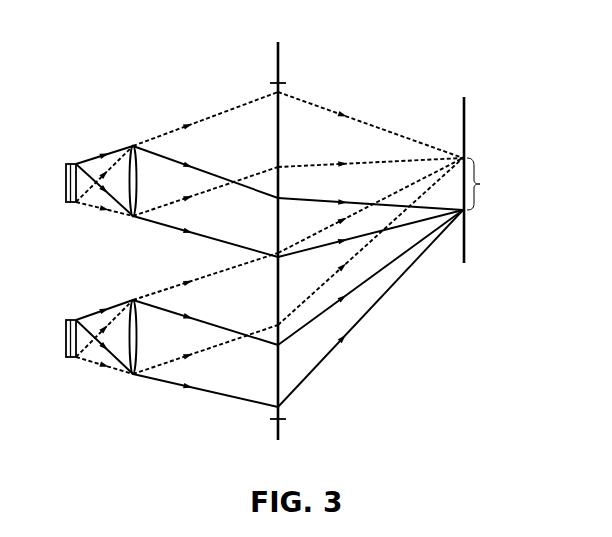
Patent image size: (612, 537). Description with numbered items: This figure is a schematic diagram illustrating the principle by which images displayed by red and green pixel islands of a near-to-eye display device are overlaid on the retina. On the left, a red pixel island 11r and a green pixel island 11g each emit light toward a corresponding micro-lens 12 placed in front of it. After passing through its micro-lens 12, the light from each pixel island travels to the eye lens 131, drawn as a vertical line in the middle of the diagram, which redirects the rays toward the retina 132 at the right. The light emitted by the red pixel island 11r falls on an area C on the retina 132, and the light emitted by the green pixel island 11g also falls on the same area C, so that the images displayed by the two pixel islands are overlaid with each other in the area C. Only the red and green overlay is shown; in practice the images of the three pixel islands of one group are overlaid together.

The red pixel island 11r is at (66, 163).
The green pixel island 11g is at (66, 320).
The micro-lens 12 is at (133, 146).
The eye lens 131 is at (281, 62).
The retina 132 is at (466, 113).
The area C is at (488, 184).